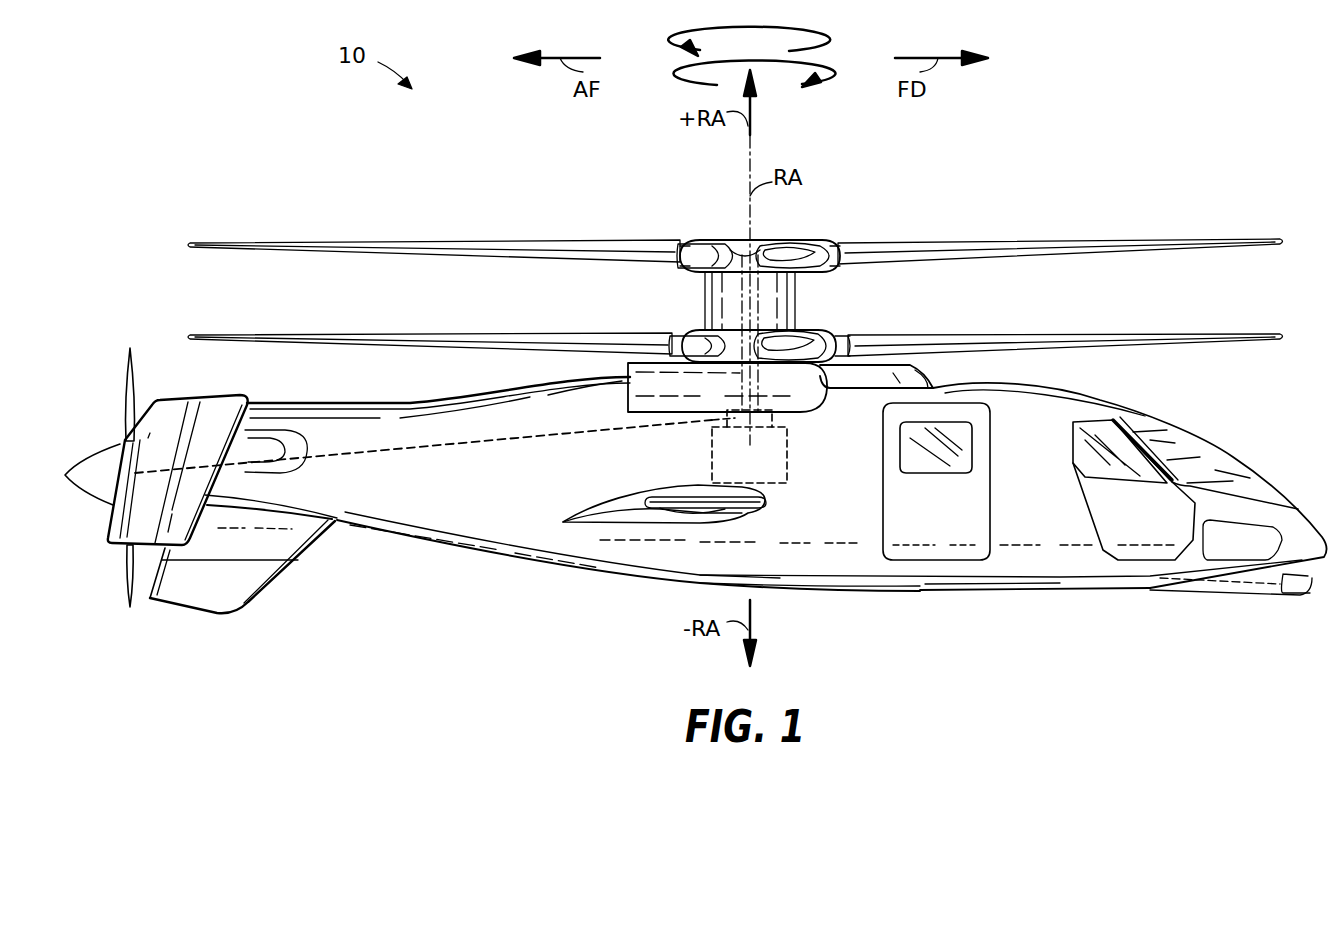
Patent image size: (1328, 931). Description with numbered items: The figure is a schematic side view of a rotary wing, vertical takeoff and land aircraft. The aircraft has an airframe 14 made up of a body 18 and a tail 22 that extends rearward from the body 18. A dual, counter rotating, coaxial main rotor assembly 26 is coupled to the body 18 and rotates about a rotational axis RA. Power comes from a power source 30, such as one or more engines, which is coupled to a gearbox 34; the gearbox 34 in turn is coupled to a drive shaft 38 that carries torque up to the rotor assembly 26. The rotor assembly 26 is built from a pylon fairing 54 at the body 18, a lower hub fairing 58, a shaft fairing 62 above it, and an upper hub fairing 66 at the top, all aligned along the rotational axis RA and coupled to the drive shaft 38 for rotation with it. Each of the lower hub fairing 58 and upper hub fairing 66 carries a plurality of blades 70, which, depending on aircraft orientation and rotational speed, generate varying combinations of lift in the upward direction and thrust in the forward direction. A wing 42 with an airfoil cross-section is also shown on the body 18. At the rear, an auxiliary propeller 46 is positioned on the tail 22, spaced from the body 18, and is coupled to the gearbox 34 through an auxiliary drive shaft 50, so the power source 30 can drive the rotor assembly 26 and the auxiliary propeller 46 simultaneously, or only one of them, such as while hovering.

The airframe 14 is at (975, 590).
The body 18 is at (447, 543).
The tail 22 is at (310, 582).
The main rotor assembly 26 is at (834, 197).
The power source 30 is at (787, 465).
The gearbox 34 is at (773, 418).
The drive shaft 38 is at (740, 297).
The wing 42 is at (611, 508).
The auxiliary propeller 46 is at (128, 383).
The auxiliary drive shaft 50 is at (421, 450).
The pylon fairing 54 is at (623, 400).
The lower hub fairing 58 is at (817, 330).
The shaft fairing 62 is at (700, 315).
The upper hub fairing 66 is at (740, 240).
The blades 70 is at (325, 241).